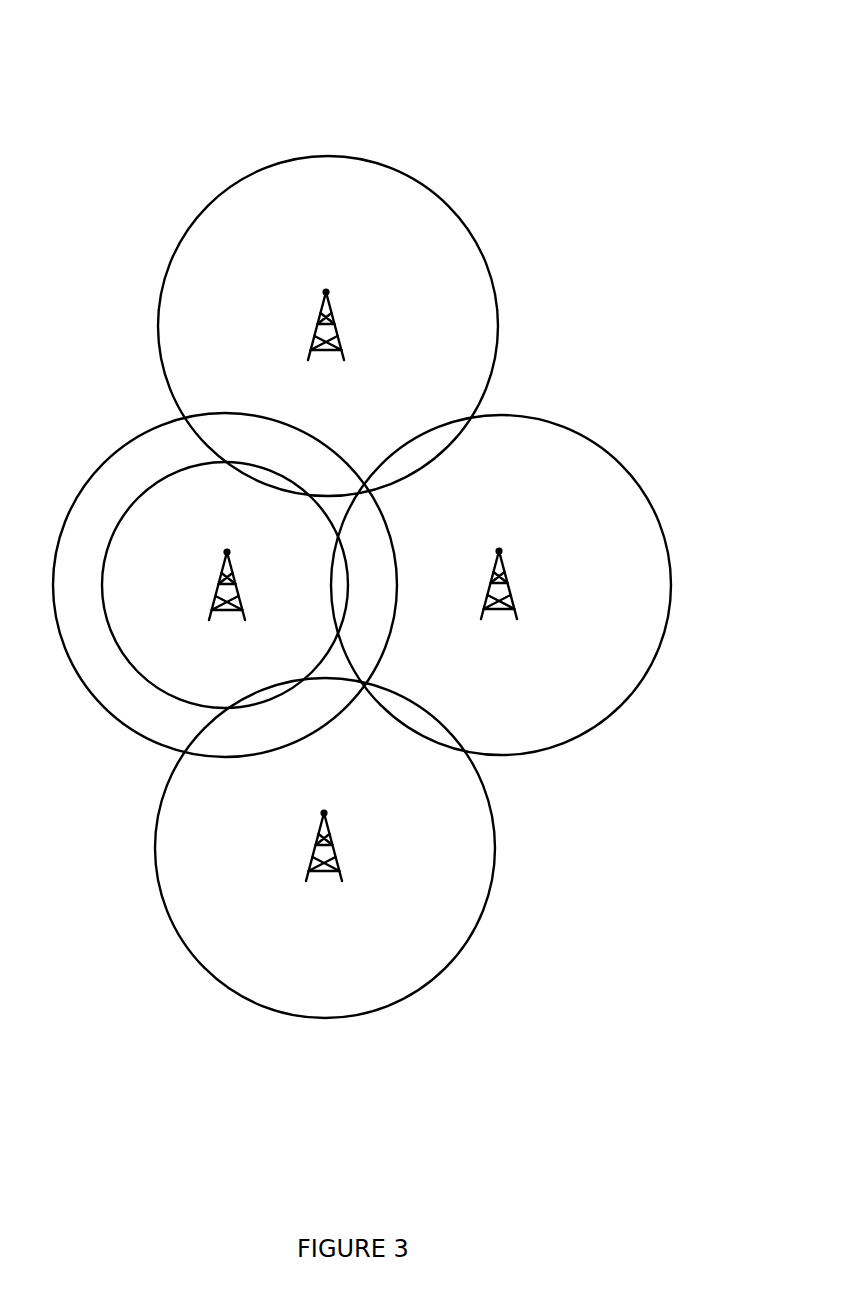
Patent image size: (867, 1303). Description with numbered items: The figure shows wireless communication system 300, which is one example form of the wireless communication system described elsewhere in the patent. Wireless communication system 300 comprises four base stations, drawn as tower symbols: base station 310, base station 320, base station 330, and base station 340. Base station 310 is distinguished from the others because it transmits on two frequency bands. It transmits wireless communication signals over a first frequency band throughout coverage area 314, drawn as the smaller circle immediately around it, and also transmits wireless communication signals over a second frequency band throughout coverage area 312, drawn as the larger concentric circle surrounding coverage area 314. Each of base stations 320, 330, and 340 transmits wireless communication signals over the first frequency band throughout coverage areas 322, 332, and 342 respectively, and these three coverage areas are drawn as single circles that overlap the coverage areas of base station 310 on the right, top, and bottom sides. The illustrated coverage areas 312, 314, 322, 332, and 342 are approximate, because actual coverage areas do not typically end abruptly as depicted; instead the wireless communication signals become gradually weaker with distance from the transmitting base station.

The wireless communication system 300 is at (718, 30).
The base station 310 is at (244, 531).
The coverage area 312 is at (93, 730).
The coverage area 314 is at (162, 667).
The base station 320 is at (516, 531).
The coverage area 322 is at (676, 492).
The base station 330 is at (342, 273).
The coverage area 332 is at (488, 214).
The base station 340 is at (352, 820).
The coverage area 342 is at (520, 828).